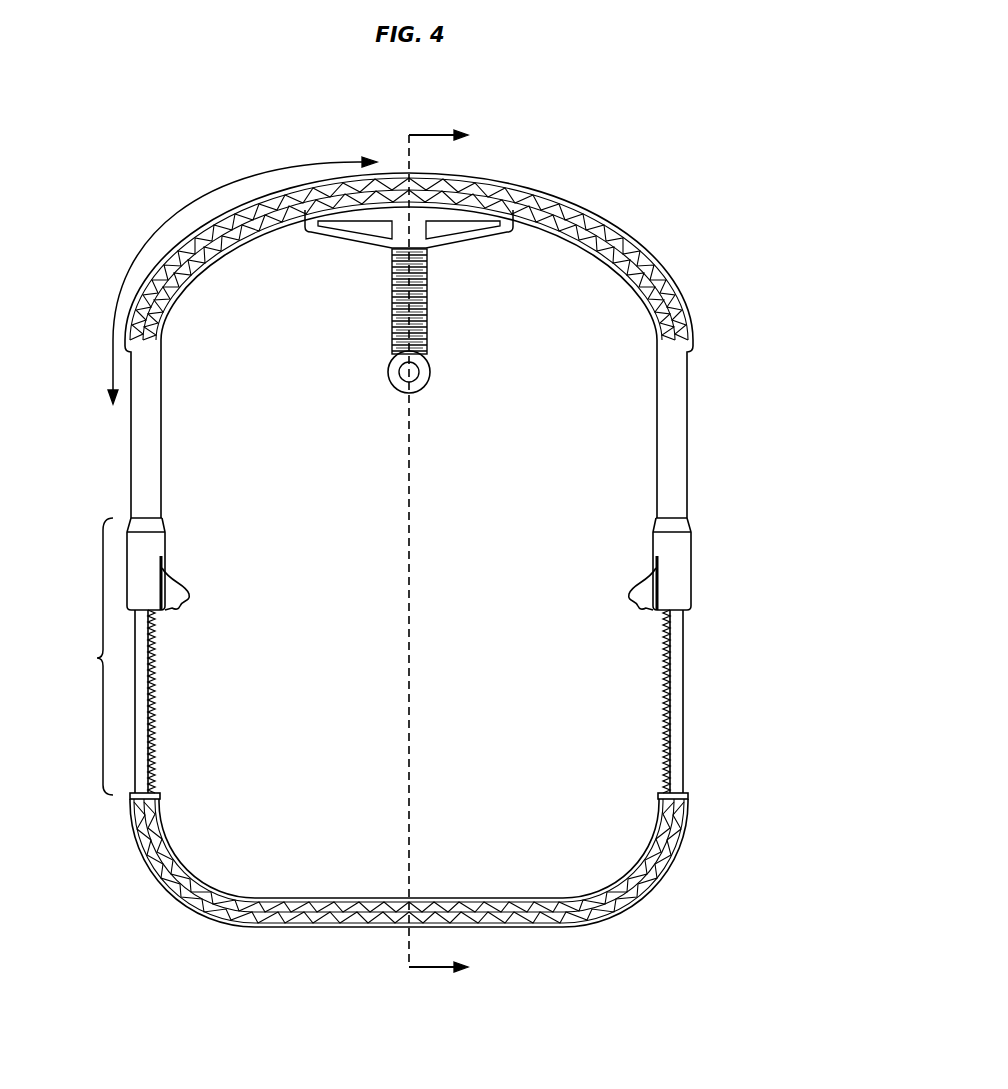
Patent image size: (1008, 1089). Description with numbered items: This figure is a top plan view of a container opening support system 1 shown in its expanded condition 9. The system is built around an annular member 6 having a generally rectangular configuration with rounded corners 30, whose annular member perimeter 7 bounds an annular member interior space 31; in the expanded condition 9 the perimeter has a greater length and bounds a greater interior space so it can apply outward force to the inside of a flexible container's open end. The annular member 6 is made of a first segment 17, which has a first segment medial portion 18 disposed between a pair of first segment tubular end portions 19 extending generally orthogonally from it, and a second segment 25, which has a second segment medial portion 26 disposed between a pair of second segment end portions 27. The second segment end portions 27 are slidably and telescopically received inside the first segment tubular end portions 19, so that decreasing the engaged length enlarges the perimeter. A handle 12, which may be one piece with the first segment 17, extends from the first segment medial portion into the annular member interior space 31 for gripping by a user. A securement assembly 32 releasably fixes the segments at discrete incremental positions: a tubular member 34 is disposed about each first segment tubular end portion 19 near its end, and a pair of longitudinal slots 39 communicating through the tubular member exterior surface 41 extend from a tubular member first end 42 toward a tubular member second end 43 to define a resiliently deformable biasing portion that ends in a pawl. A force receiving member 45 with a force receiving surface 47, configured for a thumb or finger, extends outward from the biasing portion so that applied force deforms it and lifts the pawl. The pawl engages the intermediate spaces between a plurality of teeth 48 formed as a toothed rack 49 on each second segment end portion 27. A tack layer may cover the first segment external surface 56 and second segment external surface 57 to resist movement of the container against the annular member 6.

The container opening support system 1 is at (676, 84).
The annular member 6 is at (773, 448).
The annular member perimeter 7 is at (229, 190).
The expanded condition 9 is at (712, 452).
The handle 12 is at (430, 328).
The first segment 17 is at (422, 228).
The first segment medial portion 18 is at (455, 178).
The first segment tubular end portions 19 is at (150, 440).
The second segment 25 is at (424, 899).
The second segment medial portion 26 is at (506, 930).
The second segment end portions 27 is at (434, 704).
The corners 30 is at (426, 885).
The annular member interior space 31 is at (443, 561).
The securement assembly 32 is at (87, 656).
The tubular member 34 is at (433, 582).
The longitudinal slots 39 is at (409, 607).
The tubular member exterior surface 41 is at (671, 546).
The tubular member first end 42 is at (689, 612).
The tubular member second end 43 is at (688, 522).
The force receiving member 45 is at (409, 607).
The force receiving surface 47 is at (655, 562).
The plurality of teeth 48 is at (409, 701).
The toothed rack 49 is at (668, 710).
The first segment external surface 56 is at (668, 260).
The second segment external surface 57 is at (672, 870).